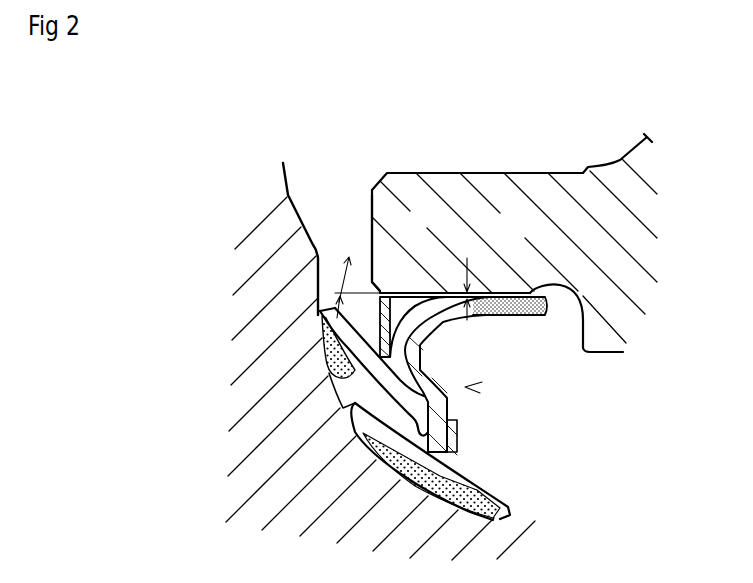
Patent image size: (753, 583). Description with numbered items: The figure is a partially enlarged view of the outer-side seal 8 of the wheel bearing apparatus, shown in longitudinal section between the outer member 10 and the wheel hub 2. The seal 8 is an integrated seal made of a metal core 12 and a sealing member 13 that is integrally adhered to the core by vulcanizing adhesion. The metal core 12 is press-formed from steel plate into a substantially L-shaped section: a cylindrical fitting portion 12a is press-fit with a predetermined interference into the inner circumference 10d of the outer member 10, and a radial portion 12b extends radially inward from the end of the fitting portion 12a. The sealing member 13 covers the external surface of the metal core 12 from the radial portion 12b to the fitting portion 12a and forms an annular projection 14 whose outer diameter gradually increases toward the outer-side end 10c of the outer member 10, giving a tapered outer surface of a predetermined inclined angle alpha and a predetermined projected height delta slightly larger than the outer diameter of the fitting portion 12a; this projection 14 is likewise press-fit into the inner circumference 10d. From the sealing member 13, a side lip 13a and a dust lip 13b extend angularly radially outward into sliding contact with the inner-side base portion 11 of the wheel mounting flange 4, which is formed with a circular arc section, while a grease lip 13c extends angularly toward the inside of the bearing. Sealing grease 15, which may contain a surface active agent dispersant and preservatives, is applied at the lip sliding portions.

The wheel hub 2 is at (283, 529).
The wheel mounting flange 4 is at (247, 232).
The outer-side seal 8 is at (466, 387).
The outer member 10 is at (503, 203).
The outer-side end of the outer member 10c is at (372, 217).
The inner circumference of the outer member 10d is at (502, 307).
The inner-side base portion of the wheel mounting flange 11 is at (341, 300).
The metal core 12 is at (479, 376).
The cylindrical fitting portion 12a is at (467, 316).
The radial portion 12b is at (407, 350).
The sealing member 13 is at (334, 410).
The side lip 13a is at (325, 356).
The dust lip 13b is at (341, 409).
The grease lip 13c is at (547, 523).
The annular projection 14 is at (405, 290).
The sealing grease 15 is at (327, 376).
The inclined angle alpha is at (355, 281).
The projected height delta is at (462, 278).